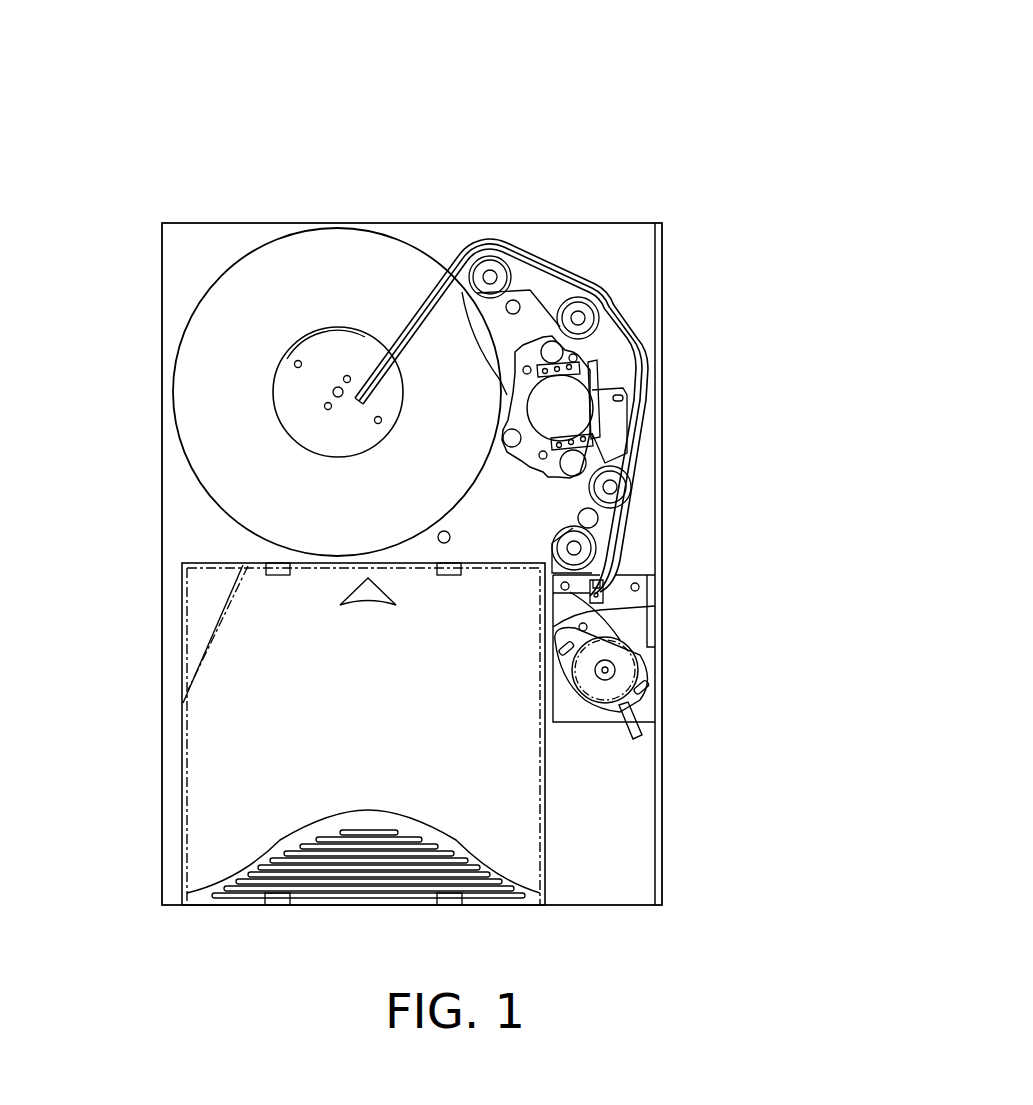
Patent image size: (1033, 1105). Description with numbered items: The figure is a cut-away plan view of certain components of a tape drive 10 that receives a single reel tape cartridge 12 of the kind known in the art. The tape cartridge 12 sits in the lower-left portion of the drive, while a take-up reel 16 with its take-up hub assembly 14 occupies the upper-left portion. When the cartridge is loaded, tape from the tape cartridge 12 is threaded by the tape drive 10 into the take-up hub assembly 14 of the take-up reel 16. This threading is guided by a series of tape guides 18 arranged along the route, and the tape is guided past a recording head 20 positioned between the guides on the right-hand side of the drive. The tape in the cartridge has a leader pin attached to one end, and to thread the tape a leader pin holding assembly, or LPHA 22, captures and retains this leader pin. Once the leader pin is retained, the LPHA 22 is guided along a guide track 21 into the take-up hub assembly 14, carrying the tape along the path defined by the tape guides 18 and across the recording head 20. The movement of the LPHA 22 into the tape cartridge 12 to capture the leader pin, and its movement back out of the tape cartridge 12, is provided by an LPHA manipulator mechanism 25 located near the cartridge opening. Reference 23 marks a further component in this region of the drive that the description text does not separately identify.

The tape drive 10 is at (487, 80).
The tape cartridge 12 is at (285, 797).
The take-up hub assembly 14 is at (338, 355).
The take-up reel 16 is at (208, 287).
The tape guides 18 is at (490, 270).
The recording head 20 is at (633, 393).
The guide track 21 is at (648, 495).
The leader pin holding assembly 22 is at (612, 642).
The tape cleaner 23 is at (603, 580).
The LPHA manipulator mechanism 25 is at (585, 602).